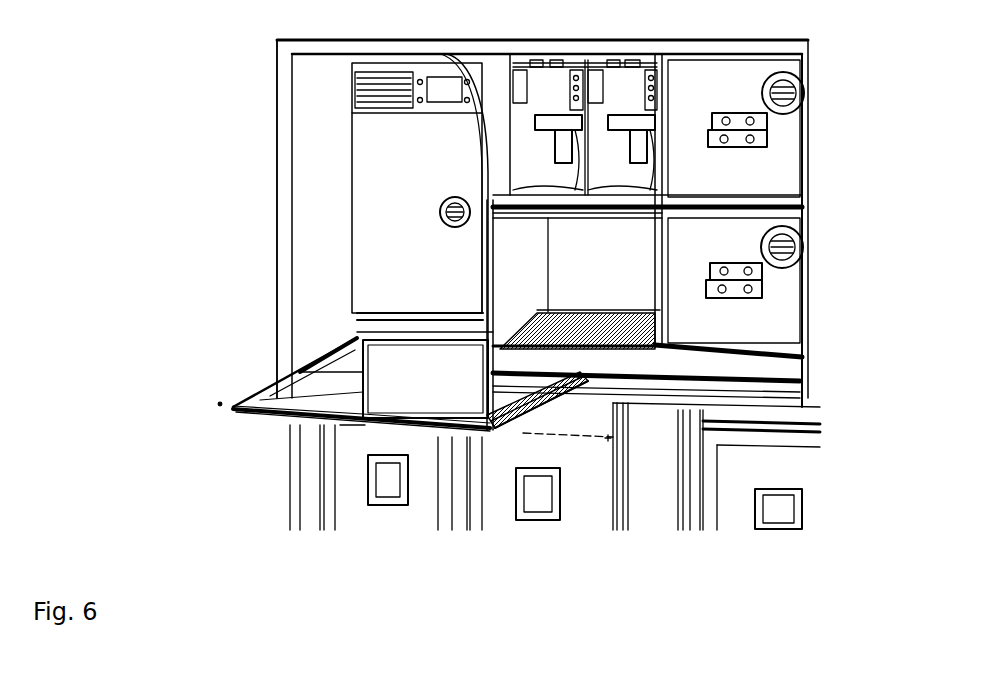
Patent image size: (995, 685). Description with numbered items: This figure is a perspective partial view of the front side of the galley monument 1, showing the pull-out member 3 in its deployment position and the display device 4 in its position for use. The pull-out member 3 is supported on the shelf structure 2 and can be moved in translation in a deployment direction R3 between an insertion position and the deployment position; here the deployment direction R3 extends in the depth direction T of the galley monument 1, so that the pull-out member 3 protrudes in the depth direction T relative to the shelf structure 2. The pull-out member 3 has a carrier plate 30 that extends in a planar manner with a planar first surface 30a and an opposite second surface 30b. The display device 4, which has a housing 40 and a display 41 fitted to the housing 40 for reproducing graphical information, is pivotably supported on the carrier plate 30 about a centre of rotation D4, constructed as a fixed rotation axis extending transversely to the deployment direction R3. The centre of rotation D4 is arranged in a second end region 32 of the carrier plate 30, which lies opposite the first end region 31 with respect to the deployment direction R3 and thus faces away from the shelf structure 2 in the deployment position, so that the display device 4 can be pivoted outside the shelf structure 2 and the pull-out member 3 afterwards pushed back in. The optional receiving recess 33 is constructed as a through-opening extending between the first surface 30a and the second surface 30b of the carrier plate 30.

The galley monument 1 is at (205, 142).
The shelf structure 2 is at (282, 230).
The pull-out member 3 is at (265, 428).
The carrier plate 30 is at (308, 424).
The first surface 30a is at (313, 392).
The second surface 30b is at (340, 425).
The housing 40 is at (352, 424).
The display 41 is at (447, 388).
The display device 4 is at (488, 425).
The first end region 31 is at (567, 395).
The second end region 32 is at (515, 430).
The receiving recess 33 is at (503, 403).
The depth direction T is at (185, 255).
The deployment direction R3 is at (263, 361).
The centre of rotation D4 is at (211, 403).